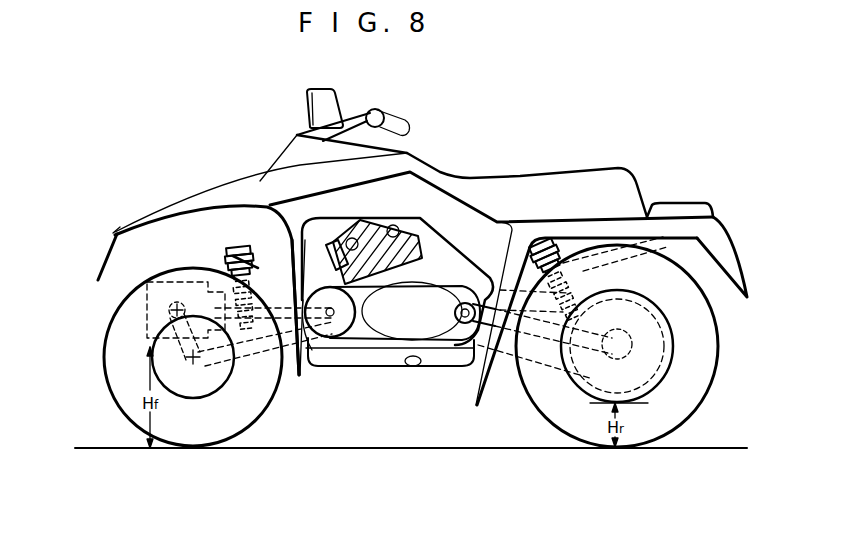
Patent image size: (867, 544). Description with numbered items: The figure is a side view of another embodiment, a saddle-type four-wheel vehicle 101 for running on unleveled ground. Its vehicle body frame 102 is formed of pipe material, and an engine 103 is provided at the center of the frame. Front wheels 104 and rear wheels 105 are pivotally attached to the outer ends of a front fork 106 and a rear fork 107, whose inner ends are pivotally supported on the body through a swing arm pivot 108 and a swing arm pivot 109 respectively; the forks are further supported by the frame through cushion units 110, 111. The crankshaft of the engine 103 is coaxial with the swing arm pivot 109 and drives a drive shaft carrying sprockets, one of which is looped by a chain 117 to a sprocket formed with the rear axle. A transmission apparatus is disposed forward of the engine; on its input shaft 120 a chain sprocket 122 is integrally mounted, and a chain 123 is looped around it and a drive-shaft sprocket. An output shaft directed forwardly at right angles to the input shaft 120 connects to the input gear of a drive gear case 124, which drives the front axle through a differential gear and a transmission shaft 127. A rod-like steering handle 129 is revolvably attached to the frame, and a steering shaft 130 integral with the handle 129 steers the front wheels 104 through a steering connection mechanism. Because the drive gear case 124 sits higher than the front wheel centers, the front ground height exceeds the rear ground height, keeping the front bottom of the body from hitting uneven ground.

The saddle-type four-wheel vehicle 101 is at (641, 149).
The vehicle body frame 102 is at (363, 366).
The engine 103 is at (428, 268).
The front wheels 104 is at (128, 393).
The rear wheels 105 is at (690, 382).
The front fork 106 is at (257, 352).
The rear fork 107 is at (545, 337).
The swing arm pivot 108 is at (312, 362).
The swing arm pivot 109 is at (465, 322).
The cushion unit 110 is at (224, 265).
The cushion unit 111 is at (552, 258).
The chain 117 is at (507, 360).
The input shaft 120 is at (298, 252).
The chain sprocket 122 is at (333, 330).
The chain 123 is at (367, 338).
The drive gear case 124 is at (147, 322).
The transmission shaft 127 is at (163, 338).
The rod-like steering handle 129 is at (388, 118).
The steering shaft 130 is at (236, 247).